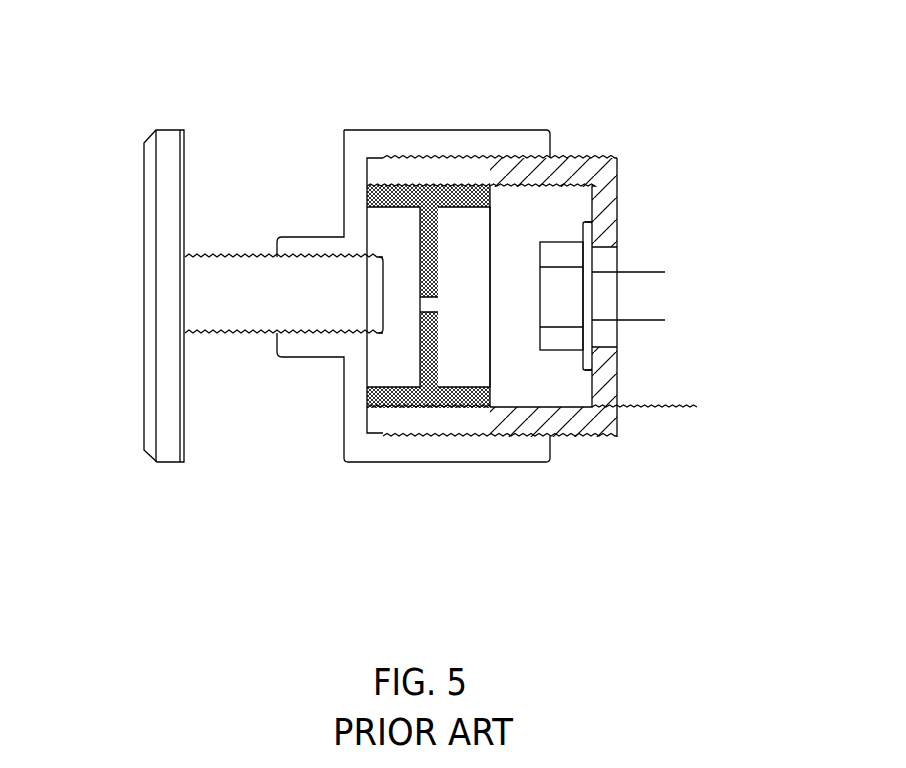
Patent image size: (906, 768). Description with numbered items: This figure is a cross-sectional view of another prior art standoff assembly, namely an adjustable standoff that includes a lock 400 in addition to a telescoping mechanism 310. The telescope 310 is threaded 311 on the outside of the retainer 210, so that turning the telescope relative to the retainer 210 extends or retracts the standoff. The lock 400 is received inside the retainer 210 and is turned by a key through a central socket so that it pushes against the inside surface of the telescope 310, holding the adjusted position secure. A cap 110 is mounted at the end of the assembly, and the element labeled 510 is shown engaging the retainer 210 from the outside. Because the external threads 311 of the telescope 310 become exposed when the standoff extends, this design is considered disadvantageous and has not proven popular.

The cap 110 is at (170, 148).
The telescoping mechanism 310 is at (357, 143).
The threads 311 is at (427, 158).
The lock 400 is at (383, 395).
The retainer 210 is at (603, 175).
The bolt 510 is at (627, 292).